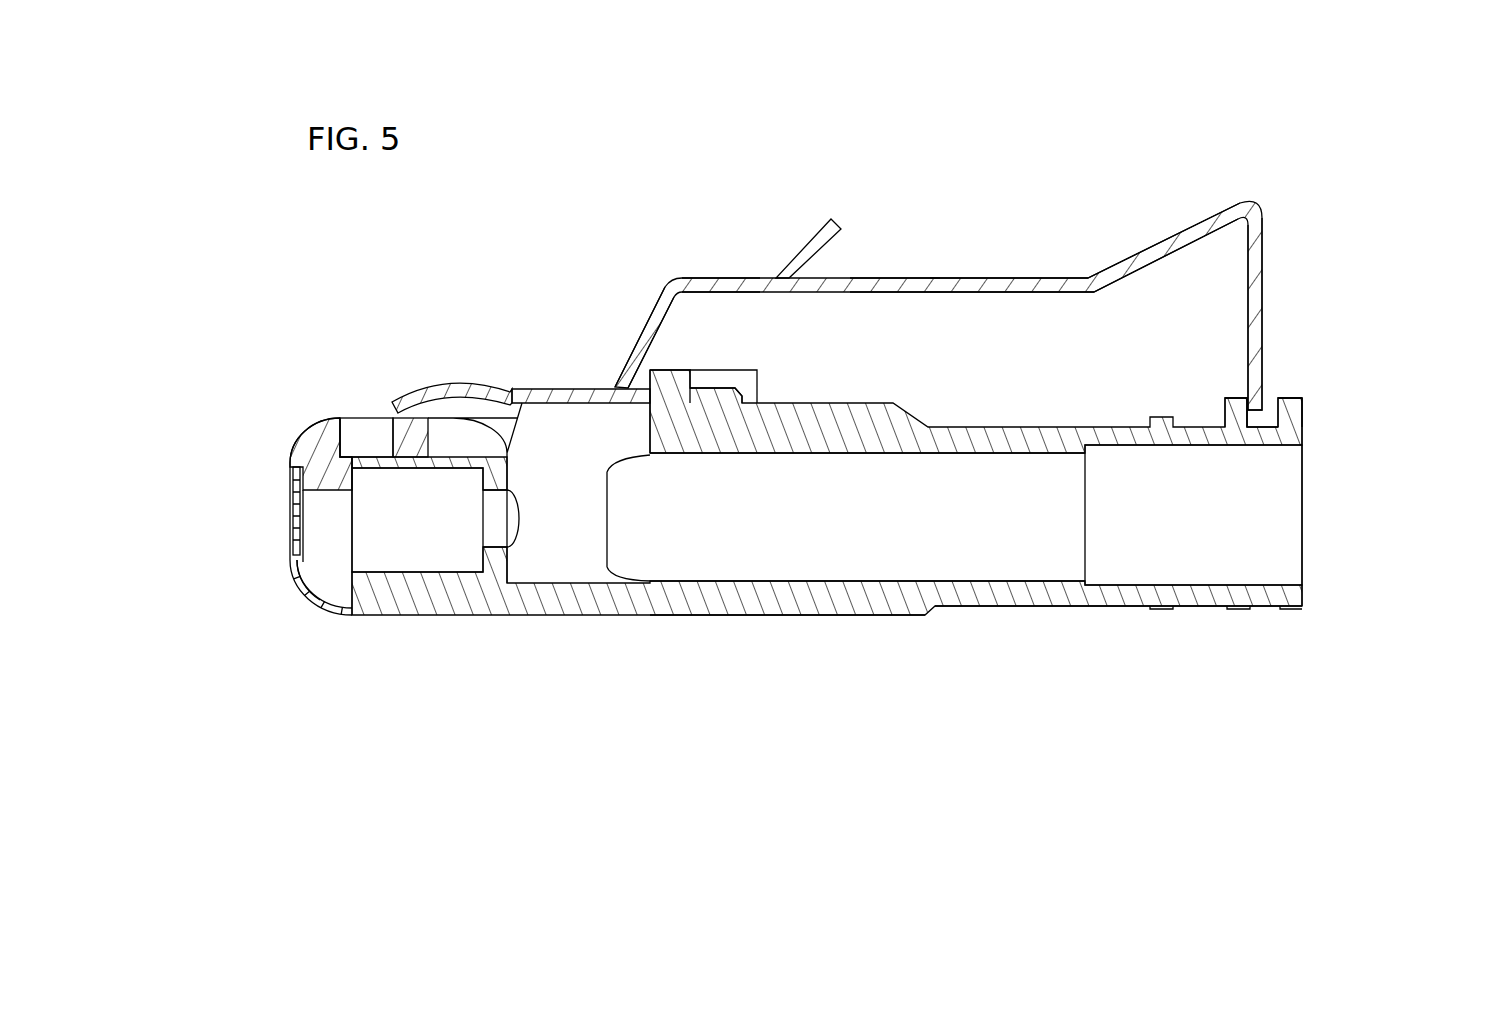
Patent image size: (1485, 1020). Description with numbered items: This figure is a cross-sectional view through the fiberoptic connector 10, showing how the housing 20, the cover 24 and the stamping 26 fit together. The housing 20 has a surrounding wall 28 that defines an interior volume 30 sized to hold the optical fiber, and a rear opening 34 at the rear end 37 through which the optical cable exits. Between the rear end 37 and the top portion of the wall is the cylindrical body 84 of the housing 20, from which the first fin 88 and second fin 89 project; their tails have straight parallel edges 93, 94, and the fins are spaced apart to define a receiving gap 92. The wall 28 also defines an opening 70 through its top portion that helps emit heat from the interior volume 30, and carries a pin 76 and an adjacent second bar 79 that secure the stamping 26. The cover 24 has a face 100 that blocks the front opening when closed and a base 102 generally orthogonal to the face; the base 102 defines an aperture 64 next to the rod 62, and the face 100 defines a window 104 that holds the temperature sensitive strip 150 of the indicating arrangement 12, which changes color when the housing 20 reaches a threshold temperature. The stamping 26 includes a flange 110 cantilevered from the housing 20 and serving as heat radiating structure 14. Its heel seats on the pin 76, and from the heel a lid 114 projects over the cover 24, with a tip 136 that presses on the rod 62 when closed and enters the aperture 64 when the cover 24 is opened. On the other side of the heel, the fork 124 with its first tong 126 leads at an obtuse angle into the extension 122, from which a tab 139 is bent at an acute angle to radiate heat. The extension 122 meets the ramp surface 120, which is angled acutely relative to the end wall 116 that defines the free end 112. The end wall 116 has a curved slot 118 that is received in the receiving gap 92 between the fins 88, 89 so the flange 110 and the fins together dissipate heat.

The fiberoptic connector 10 is at (798, 172).
The indicating arrangement 12 is at (246, 507).
The heat radiating structure 14 is at (1362, 246).
The housing 20 is at (632, 613).
The cover 24 is at (293, 445).
The stamping 26 is at (953, 277).
The surrounding wall 28 is at (758, 613).
The interior volume 30 is at (885, 582).
The rear opening 34 is at (1280, 583).
The rear end 37 is at (1302, 418).
The rod 62 is at (421, 418).
The aperture 64 is at (339, 428).
The opening 70 is at (520, 430).
The pin 76 is at (675, 370).
The second bar 79 is at (742, 368).
The cylindrical body 84 is at (1077, 607).
The first fin 88 is at (1257, 423).
The second fin 89 is at (1297, 398).
The receiving gap 92 is at (1247, 422).
The straight parallel edge 93 is at (1240, 400).
The straight parallel edge 94 is at (1287, 397).
The face 100 is at (298, 566).
The base 102 is at (330, 420).
The window 104 is at (294, 556).
The flange 110 is at (1040, 277).
The free end 112 is at (1247, 270).
The lid 114 is at (462, 385).
The end wall 116 is at (1262, 250).
The slot 118 is at (1255, 313).
The ramp surface 120 is at (1160, 240).
The extension 122 is at (903, 277).
The fork 124 is at (750, 277).
The first tong 126 is at (640, 335).
The tip 136 is at (393, 420).
The tab 139 is at (836, 219).
The temperature sensitive strip 150 is at (297, 497).